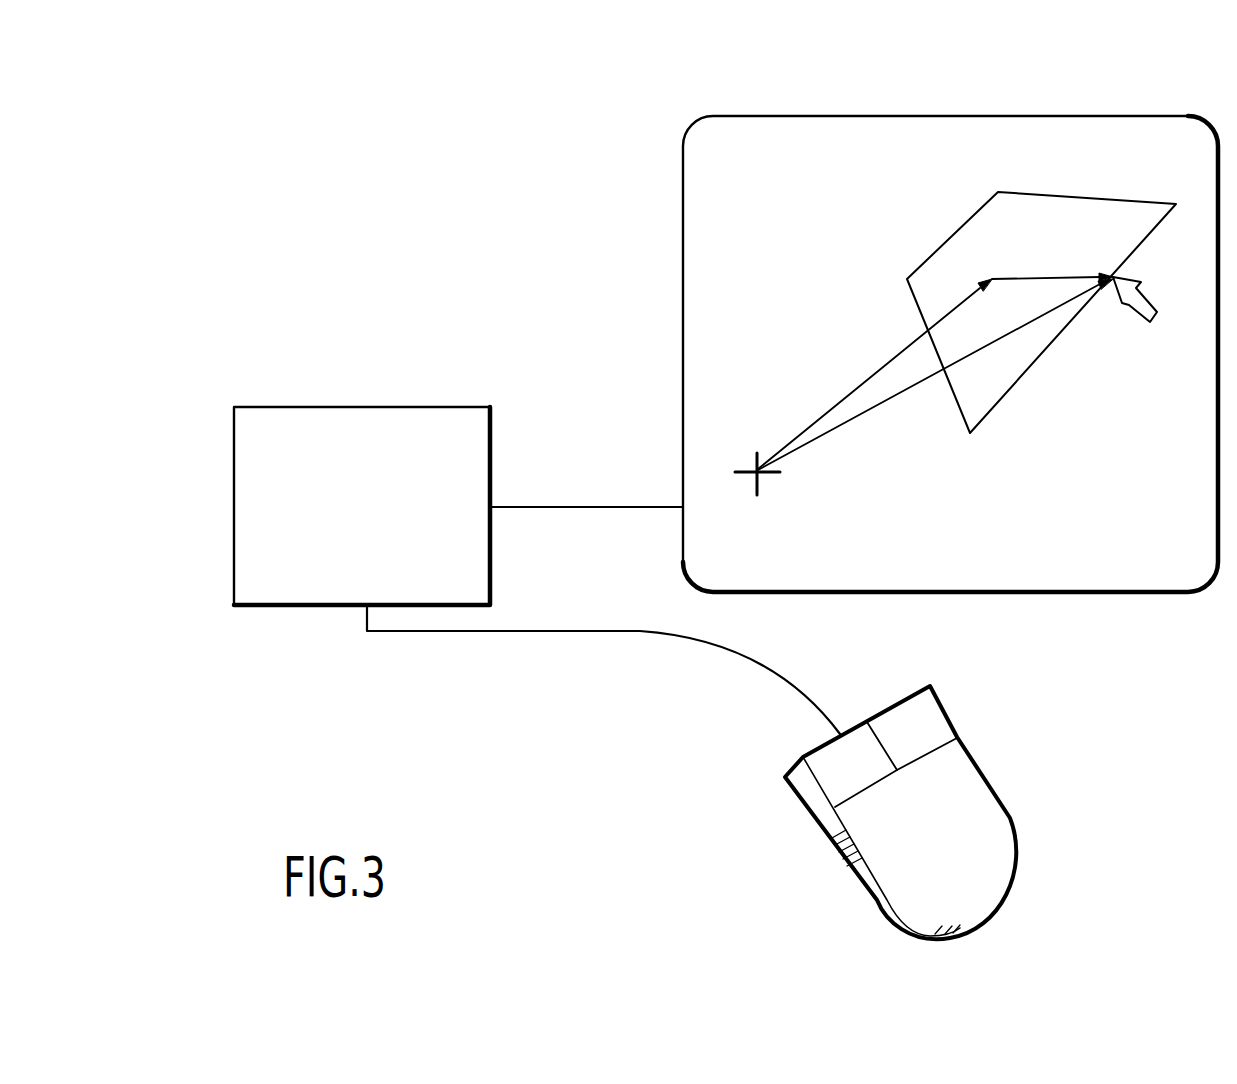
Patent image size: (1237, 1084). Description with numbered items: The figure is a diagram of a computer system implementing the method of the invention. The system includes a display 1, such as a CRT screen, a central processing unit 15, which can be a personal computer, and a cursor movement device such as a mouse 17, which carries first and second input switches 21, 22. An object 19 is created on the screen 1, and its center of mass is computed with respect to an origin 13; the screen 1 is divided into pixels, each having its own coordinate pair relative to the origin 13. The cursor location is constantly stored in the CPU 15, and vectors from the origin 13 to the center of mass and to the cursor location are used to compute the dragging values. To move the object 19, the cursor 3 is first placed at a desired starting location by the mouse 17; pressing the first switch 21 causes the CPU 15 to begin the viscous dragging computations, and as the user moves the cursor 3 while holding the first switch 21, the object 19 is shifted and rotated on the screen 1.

The display 1 is at (912, 118).
The cursor 3 is at (1148, 303).
The origin 13 is at (763, 476).
The central processing unit 15 is at (335, 413).
The mouse 17 is at (1012, 818).
The object 19 is at (953, 245).
The first input switch 21 is at (923, 723).
The second input switch 22 is at (845, 775).